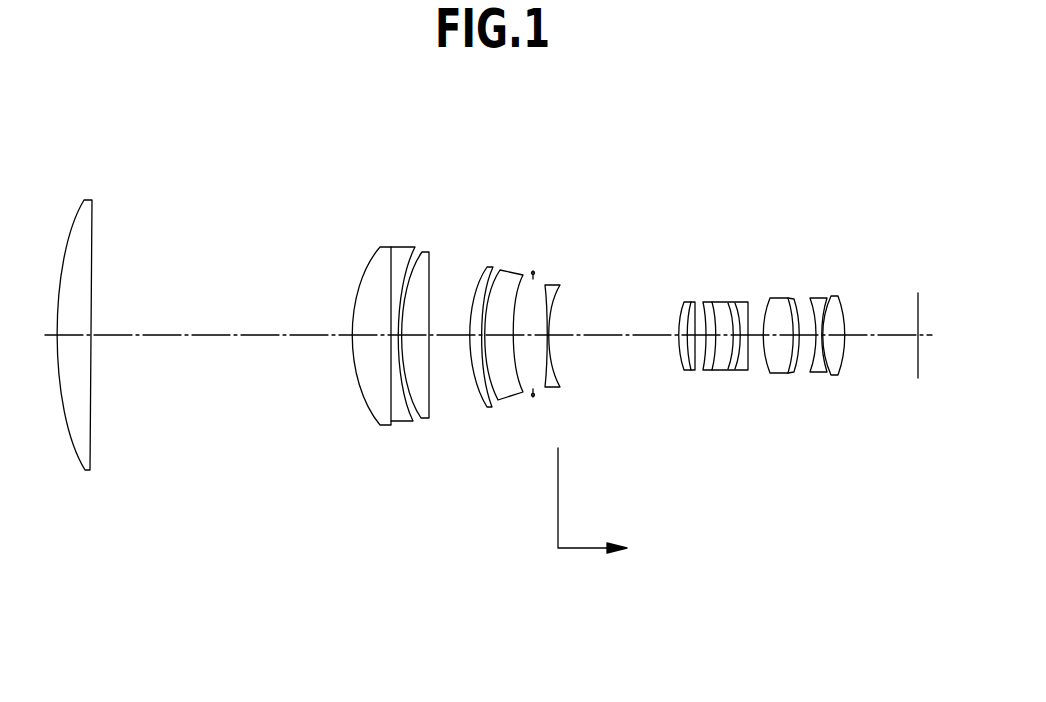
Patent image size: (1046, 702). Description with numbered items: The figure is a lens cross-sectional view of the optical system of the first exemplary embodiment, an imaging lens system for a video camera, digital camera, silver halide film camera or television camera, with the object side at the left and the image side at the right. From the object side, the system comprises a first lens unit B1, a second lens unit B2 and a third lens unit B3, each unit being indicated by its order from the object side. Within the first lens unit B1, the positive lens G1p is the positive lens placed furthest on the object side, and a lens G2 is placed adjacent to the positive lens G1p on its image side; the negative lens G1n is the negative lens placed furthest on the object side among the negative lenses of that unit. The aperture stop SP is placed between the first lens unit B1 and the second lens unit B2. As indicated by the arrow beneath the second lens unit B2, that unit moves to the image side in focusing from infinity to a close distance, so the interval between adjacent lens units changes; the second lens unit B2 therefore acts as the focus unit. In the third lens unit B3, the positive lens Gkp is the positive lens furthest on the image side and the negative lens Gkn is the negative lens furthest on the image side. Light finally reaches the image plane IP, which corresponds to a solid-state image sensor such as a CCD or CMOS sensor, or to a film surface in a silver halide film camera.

The first lens unit B1 is at (522, 195).
The second lens unit B2 is at (575, 195).
The third lens unit B3 is at (838, 195).
The positive lens G1p is at (82, 445).
The negative lens G1n is at (398, 423).
The lens G2 is at (370, 383).
The aperture stop SP is at (532, 396).
The negative lens Gkn is at (815, 377).
The positive lens Gkp is at (843, 358).
The image plane IP is at (937, 335).